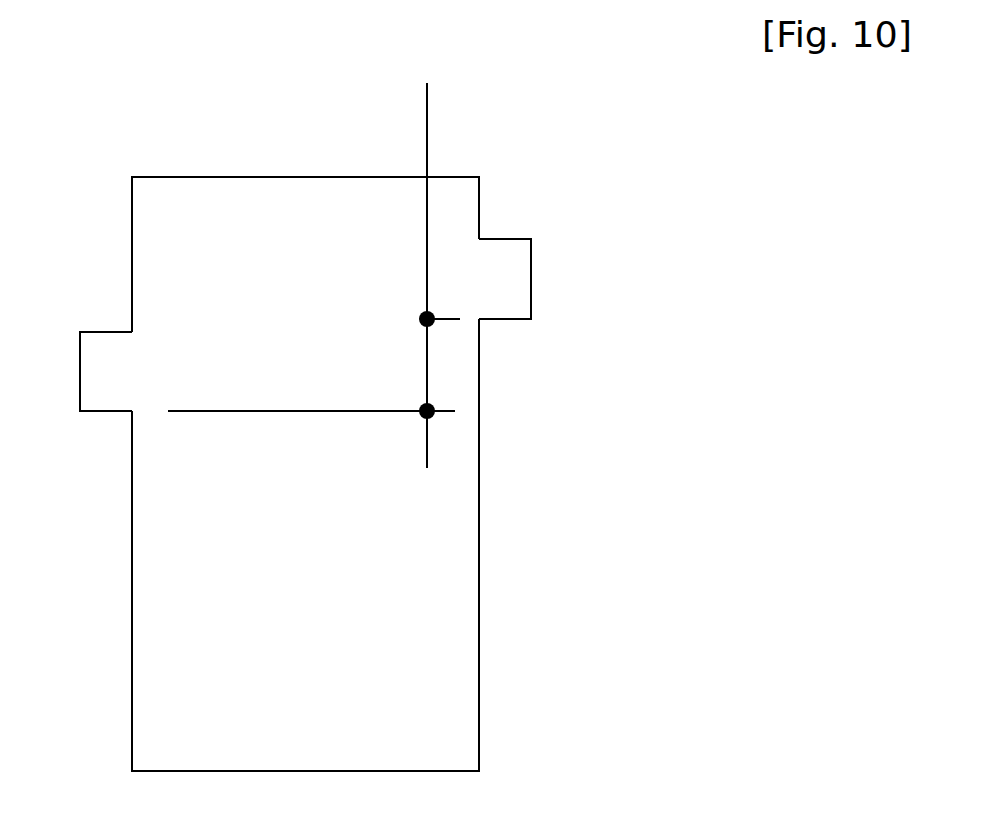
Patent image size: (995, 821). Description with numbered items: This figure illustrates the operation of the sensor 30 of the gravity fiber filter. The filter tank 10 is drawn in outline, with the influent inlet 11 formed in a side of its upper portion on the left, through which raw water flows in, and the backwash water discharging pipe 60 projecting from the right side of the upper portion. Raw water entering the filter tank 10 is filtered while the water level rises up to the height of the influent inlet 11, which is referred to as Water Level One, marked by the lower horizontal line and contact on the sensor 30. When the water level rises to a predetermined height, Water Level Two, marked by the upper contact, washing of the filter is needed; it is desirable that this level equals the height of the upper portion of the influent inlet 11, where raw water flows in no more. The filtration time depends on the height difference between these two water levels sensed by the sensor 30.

The filter tank 10 is at (479, 603).
The influent inlet 11 is at (103, 353).
The backwash water discharging pipe 60 is at (500, 252).
The sensor 30 is at (385, 292).